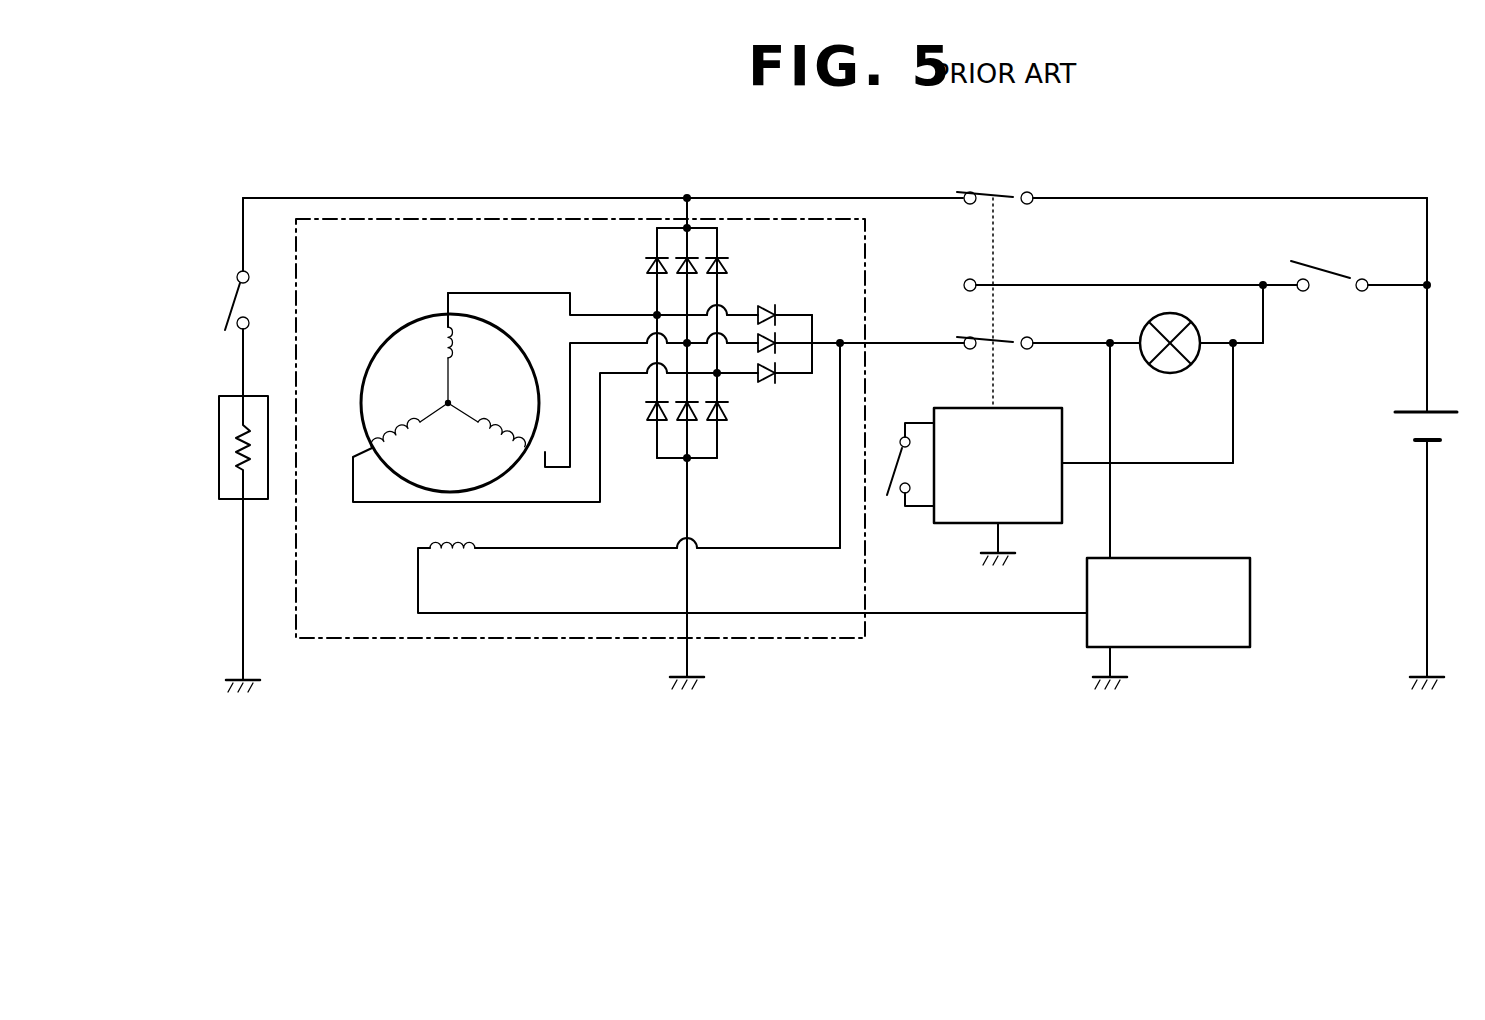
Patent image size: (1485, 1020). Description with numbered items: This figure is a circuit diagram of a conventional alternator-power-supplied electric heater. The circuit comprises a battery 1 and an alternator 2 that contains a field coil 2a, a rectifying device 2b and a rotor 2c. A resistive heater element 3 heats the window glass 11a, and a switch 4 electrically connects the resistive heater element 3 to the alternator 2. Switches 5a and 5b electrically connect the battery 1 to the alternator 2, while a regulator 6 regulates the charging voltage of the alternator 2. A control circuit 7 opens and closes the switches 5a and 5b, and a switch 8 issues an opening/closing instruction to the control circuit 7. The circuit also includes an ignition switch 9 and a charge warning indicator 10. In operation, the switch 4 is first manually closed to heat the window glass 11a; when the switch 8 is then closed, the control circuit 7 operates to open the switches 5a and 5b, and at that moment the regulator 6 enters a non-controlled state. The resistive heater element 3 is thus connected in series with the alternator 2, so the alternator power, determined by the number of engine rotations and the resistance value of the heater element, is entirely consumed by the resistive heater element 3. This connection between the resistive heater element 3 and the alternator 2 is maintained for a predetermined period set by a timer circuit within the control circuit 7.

The battery 1 is at (1444, 410).
The alternator 2 is at (522, 640).
The field coil 2a is at (475, 544).
The rectifying device 2b is at (738, 315).
The rotor 2c is at (382, 354).
The resistive heater element 3 is at (239, 453).
The switch 4 is at (229, 309).
The switch 5a is at (1001, 194).
The switch 5b is at (998, 338).
The regulator 6 is at (1209, 558).
The control circuit 7 is at (1028, 408).
The switch 8 is at (894, 468).
The ignition switch 9 is at (1330, 274).
The charge warning indicator 10 is at (1168, 313).
The window glass 11a is at (219, 413).